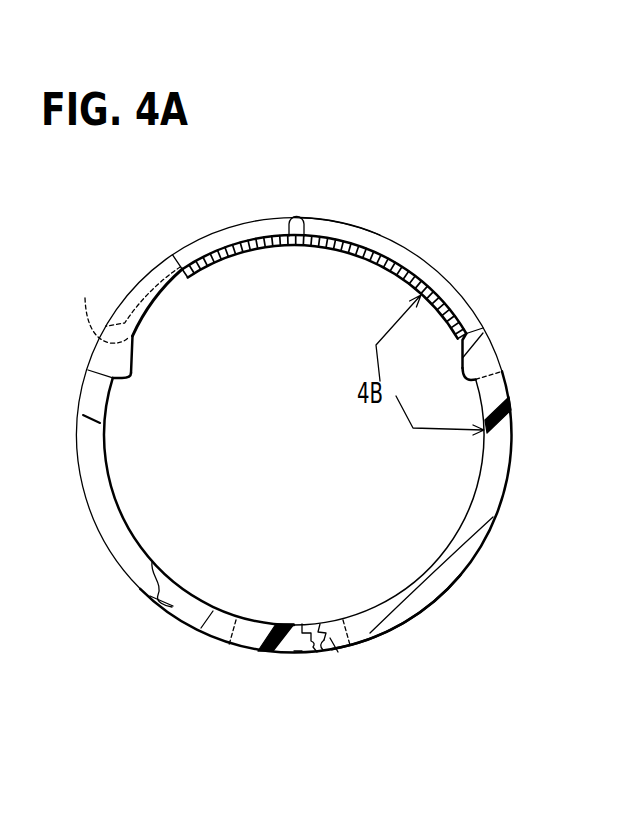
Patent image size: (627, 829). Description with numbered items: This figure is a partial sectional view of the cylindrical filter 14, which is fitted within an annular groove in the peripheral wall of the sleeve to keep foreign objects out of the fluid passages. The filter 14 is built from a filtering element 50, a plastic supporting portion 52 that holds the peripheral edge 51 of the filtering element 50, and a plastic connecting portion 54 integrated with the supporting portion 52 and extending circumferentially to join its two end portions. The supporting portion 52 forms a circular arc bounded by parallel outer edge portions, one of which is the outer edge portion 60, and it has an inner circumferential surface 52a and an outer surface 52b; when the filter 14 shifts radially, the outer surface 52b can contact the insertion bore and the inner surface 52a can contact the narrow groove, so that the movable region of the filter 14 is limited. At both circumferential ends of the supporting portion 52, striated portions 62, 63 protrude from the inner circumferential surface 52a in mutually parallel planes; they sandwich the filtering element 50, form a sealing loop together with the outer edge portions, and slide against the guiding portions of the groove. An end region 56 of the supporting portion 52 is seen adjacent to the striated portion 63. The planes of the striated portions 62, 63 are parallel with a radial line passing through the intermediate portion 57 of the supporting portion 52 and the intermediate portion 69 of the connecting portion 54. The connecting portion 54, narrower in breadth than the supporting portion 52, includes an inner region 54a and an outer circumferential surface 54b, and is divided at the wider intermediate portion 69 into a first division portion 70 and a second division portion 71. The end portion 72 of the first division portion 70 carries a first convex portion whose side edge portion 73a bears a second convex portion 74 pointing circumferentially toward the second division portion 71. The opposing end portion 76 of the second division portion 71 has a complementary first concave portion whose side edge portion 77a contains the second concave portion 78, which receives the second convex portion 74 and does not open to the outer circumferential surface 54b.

The filter 14 is at (512, 388).
The filtering element 50 is at (233, 240).
The peripheral edge 51 is at (100, 301).
The supporting portion 52 is at (412, 257).
The inner circumferential surface 52a is at (133, 333).
The outer surface 52b is at (345, 216).
The connecting portion 54 is at (498, 462).
The inner portion of lower segment 54a is at (150, 556).
The outer circumferential surface 54b is at (477, 564).
The end portion 56 is at (477, 330).
The intermediate portion 57 is at (305, 225).
The outer edge portion 60 is at (155, 278).
The striated portion 62 is at (132, 357).
The striated portion 63 is at (459, 358).
The intermediate portion 69 is at (288, 612).
The first division portion 70 is at (173, 606).
The second division portion 71 is at (433, 601).
The end portion 72 is at (284, 647).
The side edge portion 73a is at (312, 632).
The second convex portion 74 is at (323, 648).
The end portion 76 is at (338, 653).
The side edge portion 77a is at (298, 654).
The second concave portion 78 is at (303, 623).